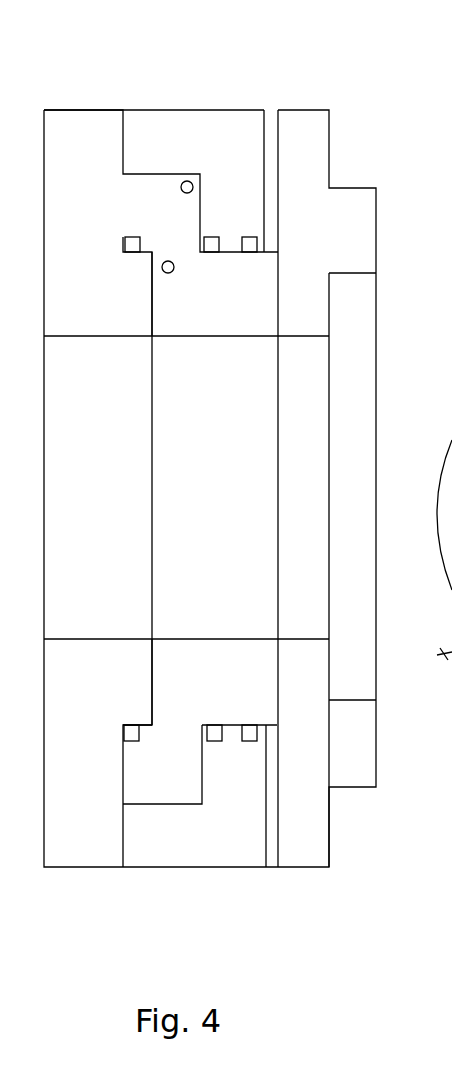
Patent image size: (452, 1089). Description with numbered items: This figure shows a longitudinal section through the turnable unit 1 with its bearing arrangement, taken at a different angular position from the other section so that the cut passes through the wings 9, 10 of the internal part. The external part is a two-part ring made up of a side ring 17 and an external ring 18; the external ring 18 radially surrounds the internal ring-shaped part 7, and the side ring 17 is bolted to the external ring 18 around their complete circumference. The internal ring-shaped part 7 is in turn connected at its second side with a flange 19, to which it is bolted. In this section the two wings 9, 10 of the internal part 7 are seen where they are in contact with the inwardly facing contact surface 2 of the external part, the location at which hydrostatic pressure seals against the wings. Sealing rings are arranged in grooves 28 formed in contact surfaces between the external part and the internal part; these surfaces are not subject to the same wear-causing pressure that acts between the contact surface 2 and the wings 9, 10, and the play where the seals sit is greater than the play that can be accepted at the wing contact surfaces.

The assembly 1 is at (87, 93).
The contact surface 2 is at (240, 724).
The internal ring-shaped part 7 is at (161, 790).
The wing 9 is at (248, 692).
The wing 10 is at (238, 273).
The side ring 17 is at (78, 840).
The external ring 18 is at (248, 853).
The flange 19 is at (312, 778).
The groove 28 is at (212, 237).